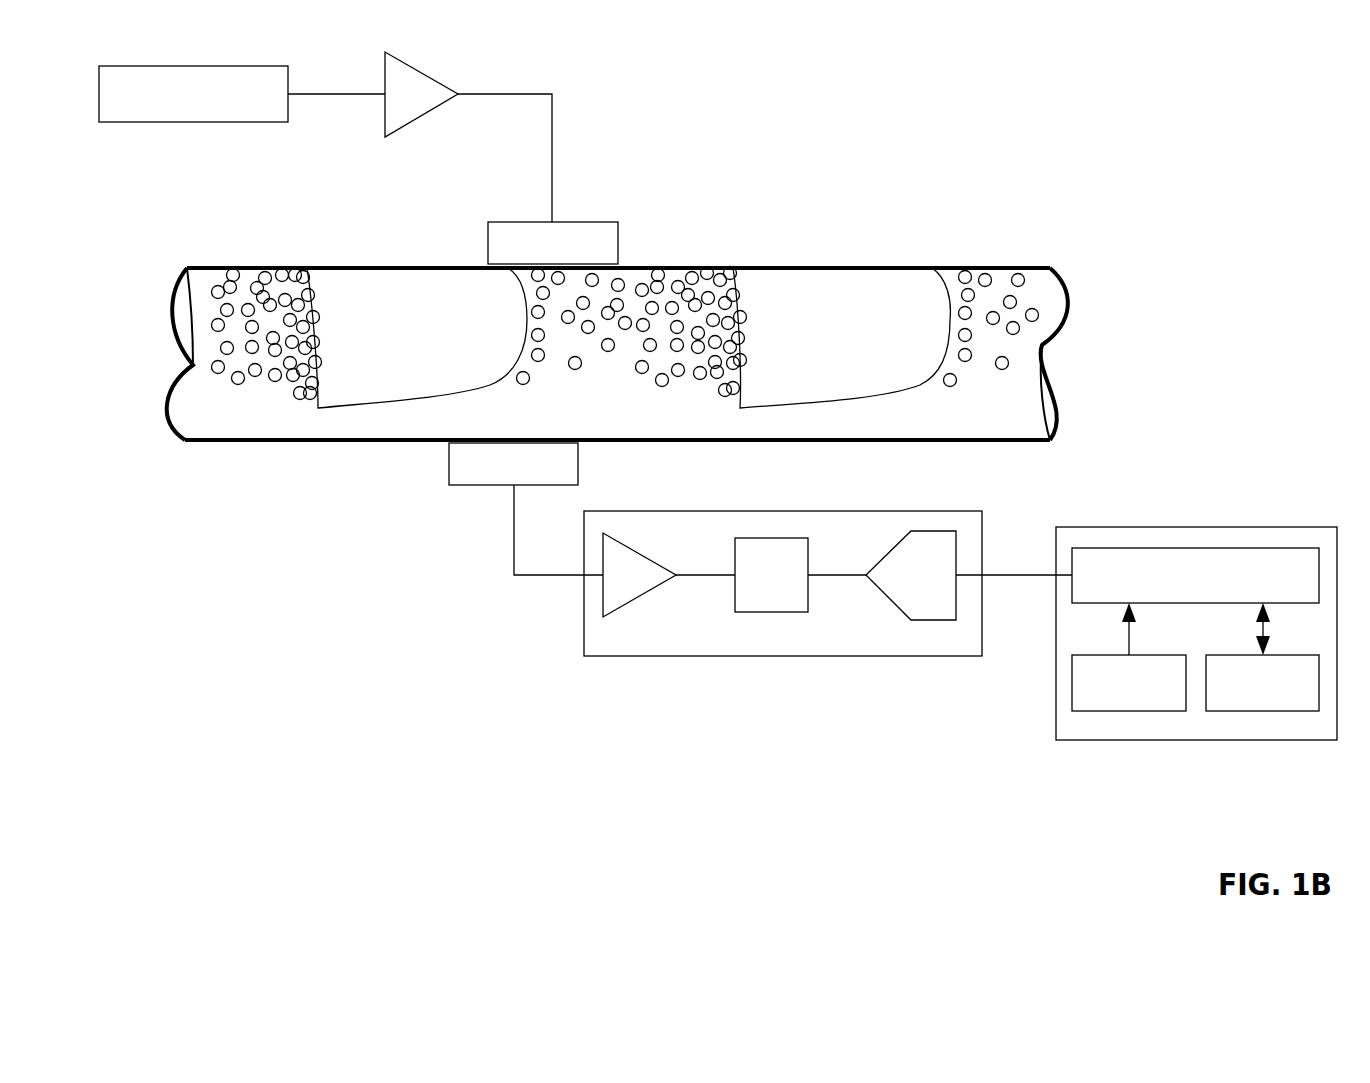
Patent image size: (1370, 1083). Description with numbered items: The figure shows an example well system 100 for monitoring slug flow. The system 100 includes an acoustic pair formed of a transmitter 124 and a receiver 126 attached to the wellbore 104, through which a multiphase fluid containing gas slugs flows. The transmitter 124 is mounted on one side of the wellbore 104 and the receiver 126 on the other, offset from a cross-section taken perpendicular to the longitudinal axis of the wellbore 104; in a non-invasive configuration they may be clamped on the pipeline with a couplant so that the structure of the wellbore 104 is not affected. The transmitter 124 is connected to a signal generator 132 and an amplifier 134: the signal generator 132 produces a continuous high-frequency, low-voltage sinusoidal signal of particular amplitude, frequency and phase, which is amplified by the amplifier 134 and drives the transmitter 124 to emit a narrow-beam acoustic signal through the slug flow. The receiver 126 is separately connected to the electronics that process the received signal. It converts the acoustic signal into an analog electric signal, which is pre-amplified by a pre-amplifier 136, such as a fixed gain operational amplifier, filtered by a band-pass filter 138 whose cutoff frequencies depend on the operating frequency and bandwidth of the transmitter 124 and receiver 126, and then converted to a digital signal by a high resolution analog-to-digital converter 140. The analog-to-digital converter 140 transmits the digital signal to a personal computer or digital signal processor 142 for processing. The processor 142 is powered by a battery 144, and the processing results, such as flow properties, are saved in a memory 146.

The system 100 is at (226, 832).
The wellbore 104 is at (782, 313).
The transmitter 124 is at (577, 222).
The receiver 126 is at (484, 485).
The signal generator 132 is at (242, 94).
The amplifier 134 is at (421, 94).
The pre-amplifier 136 is at (669, 575).
The band-pass filter 138 is at (800, 575).
The analog-to-digital converter 140 is at (969, 575).
The digital signal processor 142 is at (1195, 575).
The battery 144 is at (1129, 657).
The memory 146 is at (1262, 657).